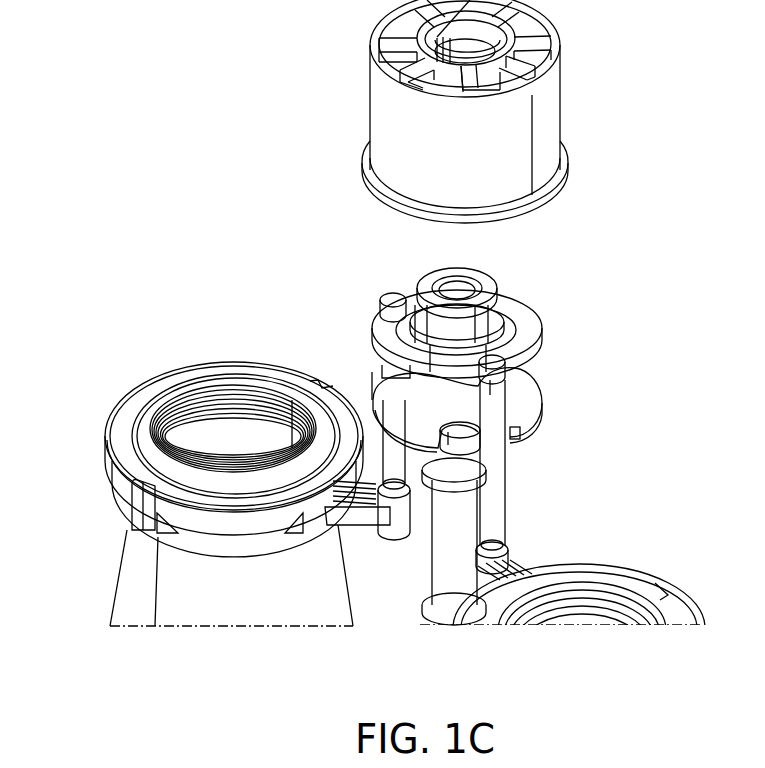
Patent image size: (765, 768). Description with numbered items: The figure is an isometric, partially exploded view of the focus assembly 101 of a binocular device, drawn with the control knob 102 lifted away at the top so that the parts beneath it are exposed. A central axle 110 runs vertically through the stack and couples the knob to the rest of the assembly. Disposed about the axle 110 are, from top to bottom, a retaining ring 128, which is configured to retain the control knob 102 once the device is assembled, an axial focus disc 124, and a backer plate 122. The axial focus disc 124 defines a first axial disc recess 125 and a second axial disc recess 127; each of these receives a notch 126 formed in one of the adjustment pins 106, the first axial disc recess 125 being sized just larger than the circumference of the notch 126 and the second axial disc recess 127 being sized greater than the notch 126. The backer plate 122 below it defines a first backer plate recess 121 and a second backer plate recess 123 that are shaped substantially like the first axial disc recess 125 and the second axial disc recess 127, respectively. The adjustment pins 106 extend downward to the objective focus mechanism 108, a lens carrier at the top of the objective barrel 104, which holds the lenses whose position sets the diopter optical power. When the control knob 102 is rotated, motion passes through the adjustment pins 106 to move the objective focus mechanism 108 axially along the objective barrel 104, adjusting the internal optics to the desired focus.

The focus assembly 101 is at (197, 58).
The control knob 102 is at (552, 92).
The objective barrel 104 is at (147, 590).
The adjustment pin 106 is at (390, 297).
The objective focus mechanism 108 is at (340, 527).
The axle 110 is at (455, 585).
The first backer plate recess 121 is at (374, 380).
The backer plate 122 is at (545, 413).
The second backer plate recess 123 is at (470, 428).
The axial focus disc 124 is at (520, 312).
The first axial disc recess 125 is at (380, 318).
The notch 126 is at (525, 390).
The second axial disc recess 127 is at (445, 372).
The retaining ring 128 is at (440, 285).